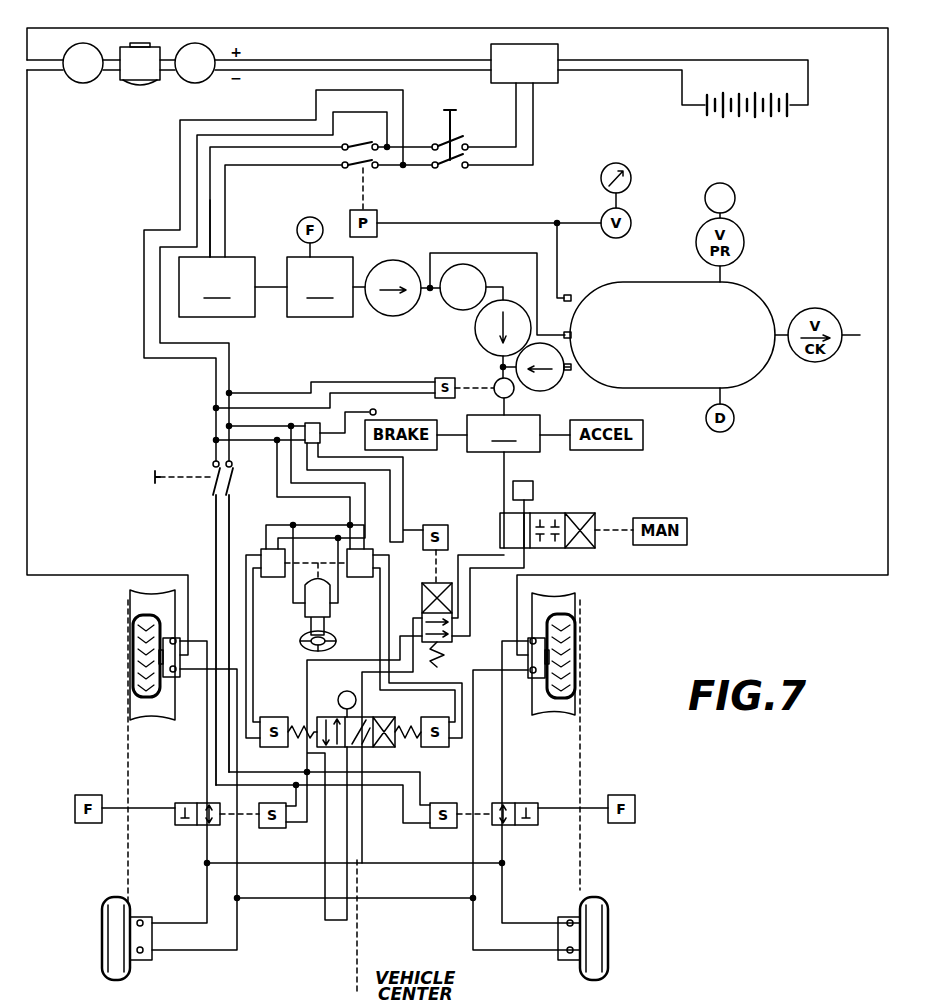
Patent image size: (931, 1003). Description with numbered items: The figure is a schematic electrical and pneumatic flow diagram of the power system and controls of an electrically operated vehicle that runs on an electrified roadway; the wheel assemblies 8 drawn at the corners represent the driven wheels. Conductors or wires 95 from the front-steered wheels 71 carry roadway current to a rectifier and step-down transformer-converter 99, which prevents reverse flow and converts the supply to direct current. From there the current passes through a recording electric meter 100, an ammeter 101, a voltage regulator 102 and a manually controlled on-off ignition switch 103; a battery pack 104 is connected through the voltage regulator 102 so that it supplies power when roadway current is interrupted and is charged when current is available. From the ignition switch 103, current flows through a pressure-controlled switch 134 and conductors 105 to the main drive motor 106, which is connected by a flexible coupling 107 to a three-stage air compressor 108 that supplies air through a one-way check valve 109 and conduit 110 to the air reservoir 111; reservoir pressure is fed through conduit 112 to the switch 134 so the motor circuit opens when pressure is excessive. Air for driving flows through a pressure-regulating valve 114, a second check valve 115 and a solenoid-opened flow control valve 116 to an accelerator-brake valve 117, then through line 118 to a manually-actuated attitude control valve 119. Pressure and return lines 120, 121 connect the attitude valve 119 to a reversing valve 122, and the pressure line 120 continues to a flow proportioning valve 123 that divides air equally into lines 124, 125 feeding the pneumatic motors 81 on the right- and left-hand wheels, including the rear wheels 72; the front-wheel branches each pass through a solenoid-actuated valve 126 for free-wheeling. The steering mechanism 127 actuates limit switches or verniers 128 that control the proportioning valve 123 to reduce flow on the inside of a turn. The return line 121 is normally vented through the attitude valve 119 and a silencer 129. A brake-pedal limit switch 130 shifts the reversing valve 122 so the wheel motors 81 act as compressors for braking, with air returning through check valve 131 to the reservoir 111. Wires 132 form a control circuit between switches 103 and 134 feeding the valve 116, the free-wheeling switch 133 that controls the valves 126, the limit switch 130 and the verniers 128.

The wheel assembly 8 is at (118, 631).
The front-steered wheels 71 is at (132, 655).
The rear wheels 72 is at (93, 929).
The pneumatic motor 81 is at (165, 700).
The conductors or wires 95 is at (75, 575).
The rectifier and step-down transformer-converter 99 is at (83, 46).
The electric meter 100 is at (140, 46).
The ammeter 101 is at (203, 45).
The voltage regulator 102 is at (510, 44).
The manually controlled on-off (ignition) switch 103 is at (461, 168).
The battery pack 104 is at (762, 112).
The conductors 105 is at (212, 195).
The main drive motor 106 is at (217, 287).
The flexible coupling 107 is at (273, 283).
The three-stage air compressor 108 is at (320, 287).
The one-way check valve 109 is at (388, 260).
The conduit 110 is at (570, 328).
The air tank or reservoir 111 is at (750, 296).
The conduit 112 is at (558, 244).
The pressure-regulating valve 114 is at (484, 276).
The second one-way check valve 115 is at (476, 330).
The normally-closed solenoid-opened flow control valve 116 is at (494, 380).
The accelerator-brake valve 117 is at (503, 433).
The line 118 is at (506, 462).
The manually-actuated vehicle attitude control valve 119 is at (588, 513).
The pressure line 120 is at (460, 612).
The return line 121 is at (306, 698).
The two-position four-way spring biased solenoid-actuated reversing valve 122 is at (432, 583).
The flow proportioning valve 123 is at (396, 748).
The pressure line 124 is at (446, 866).
The pressure line 125 is at (347, 866).
The normally-open two-position two-way solenoid-actuated valve 126 is at (190, 826).
The vehicle steering mechanism 127 is at (305, 600).
The limit switches or verniers 128 is at (261, 556).
The silencer 129 is at (535, 490).
The limit switch 130 is at (312, 420).
The one-way check valve 131 is at (558, 388).
The wires 132 is at (180, 195).
The manually-actuated two-position free-wheeling switch 133 is at (212, 480).
The pressure-controlled normally-open pressure-closed switch 134 is at (372, 170).